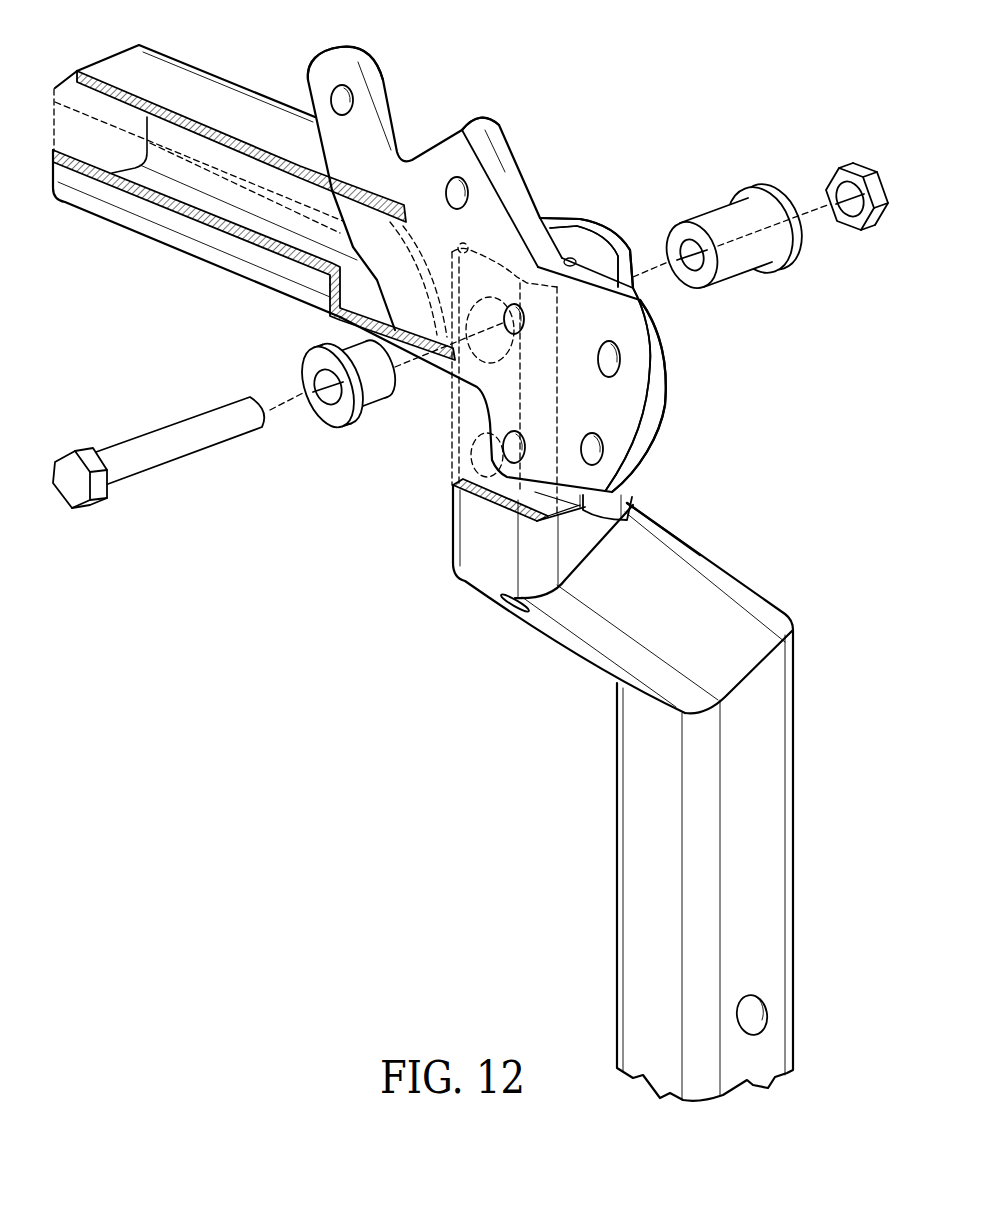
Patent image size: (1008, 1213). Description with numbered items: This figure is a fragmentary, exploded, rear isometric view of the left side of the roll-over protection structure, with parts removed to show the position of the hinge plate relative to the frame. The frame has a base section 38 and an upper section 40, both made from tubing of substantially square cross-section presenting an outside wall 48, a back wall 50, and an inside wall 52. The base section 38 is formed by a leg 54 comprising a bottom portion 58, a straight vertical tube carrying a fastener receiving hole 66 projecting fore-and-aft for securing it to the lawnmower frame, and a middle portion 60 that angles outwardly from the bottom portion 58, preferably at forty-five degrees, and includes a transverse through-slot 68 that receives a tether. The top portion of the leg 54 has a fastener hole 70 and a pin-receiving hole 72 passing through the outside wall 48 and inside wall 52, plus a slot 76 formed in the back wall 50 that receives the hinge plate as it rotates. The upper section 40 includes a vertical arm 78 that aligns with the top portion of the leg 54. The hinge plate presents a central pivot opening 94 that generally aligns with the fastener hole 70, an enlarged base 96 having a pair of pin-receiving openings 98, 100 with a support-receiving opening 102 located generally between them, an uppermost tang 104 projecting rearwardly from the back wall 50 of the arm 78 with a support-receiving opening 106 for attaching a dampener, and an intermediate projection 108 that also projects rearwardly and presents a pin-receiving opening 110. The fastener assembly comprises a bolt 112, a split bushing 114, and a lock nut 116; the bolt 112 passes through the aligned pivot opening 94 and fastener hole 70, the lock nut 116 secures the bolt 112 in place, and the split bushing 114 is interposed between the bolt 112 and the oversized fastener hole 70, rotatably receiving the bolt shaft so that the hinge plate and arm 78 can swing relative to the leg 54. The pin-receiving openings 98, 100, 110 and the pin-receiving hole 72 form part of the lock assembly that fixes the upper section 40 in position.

The base section 38 is at (385, 415).
The upper section 40 is at (254, 238).
The outside wall 48 is at (120, 200).
The back wall 50 is at (162, 63).
The inside wall 52 is at (595, 223).
The leg 54 is at (574, 638).
The bottom portion 58 is at (795, 830).
The middle portion 60 is at (560, 643).
The fastener receiving hole 66 is at (760, 1018).
The transverse through-slot 68 is at (511, 603).
The fastener hole 70 is at (494, 246).
The pin-receiving hole 72 is at (471, 470).
The slot 76 is at (640, 507).
The arm 78 is at (200, 248).
The central pivot opening 94 is at (525, 330).
The enlarged base 96 is at (665, 418).
The pin-receiving opening 98 is at (617, 365).
The pin-receiving opening 100 is at (632, 496).
The support-receiving opening 102 is at (600, 453).
The uppermost tang 104 is at (317, 62).
The support-receiving opening 106 is at (340, 92).
The intermediate projection 108 is at (494, 118).
The pin-receiving opening 110 is at (462, 183).
The bolt 112 is at (147, 440).
The split bushing 114 is at (345, 427).
The lock nut 116 is at (857, 168).